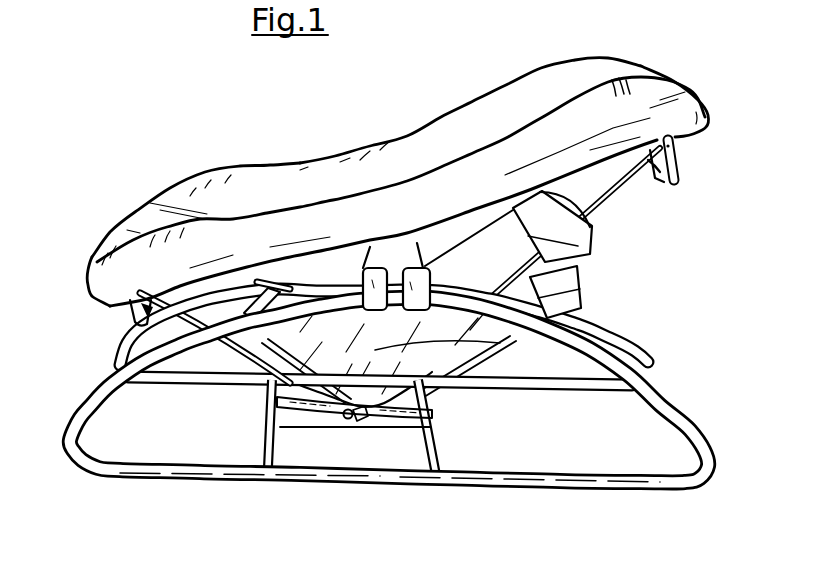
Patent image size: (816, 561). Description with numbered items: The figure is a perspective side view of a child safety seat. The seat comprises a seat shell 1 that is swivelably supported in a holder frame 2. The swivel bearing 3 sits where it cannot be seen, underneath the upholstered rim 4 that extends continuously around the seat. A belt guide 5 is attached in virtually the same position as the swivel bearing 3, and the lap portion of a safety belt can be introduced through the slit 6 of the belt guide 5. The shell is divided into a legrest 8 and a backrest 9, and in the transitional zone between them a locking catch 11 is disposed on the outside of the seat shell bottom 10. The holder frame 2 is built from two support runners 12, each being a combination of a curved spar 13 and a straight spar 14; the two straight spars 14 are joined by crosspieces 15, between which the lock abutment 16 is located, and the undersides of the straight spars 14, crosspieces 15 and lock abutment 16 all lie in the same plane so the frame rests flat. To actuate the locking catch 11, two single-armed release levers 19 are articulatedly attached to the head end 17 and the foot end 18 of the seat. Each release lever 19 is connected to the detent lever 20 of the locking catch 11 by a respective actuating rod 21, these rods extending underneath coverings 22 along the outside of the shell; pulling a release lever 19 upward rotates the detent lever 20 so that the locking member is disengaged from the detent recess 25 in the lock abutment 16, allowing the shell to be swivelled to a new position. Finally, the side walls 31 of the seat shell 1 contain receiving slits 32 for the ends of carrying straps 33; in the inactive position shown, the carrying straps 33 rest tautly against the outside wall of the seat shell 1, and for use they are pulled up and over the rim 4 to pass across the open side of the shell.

The seat shell 1 is at (440, 98).
The holder frame 2 is at (583, 490).
The swivel bearing 3 is at (390, 226).
The upholstered rim 4 is at (683, 82).
The belt guide 5 is at (470, 243).
The slit 6 is at (392, 298).
The legrest 8 is at (111, 226).
The backrest 9 is at (691, 75).
The seat shell bottom 10 is at (270, 388).
The locking catch 11 is at (361, 422).
The support runners 12 is at (549, 484).
The curved spar 13 is at (623, 321).
The straight spar 14 is at (158, 478).
The crosspieces 15 is at (260, 438).
The lock abutment 16 is at (412, 428).
The head end 17 is at (632, 64).
The foot end 18 is at (91, 252).
The release levers 19 is at (130, 317).
The detent lever 20 is at (347, 420).
The actuating rods 21 is at (654, 178).
The coverings 22 is at (628, 188).
The detent recess 25 is at (433, 404).
The side walls 31 is at (444, 345).
The receiving slits 32 is at (271, 282).
The carrying straps 33 is at (249, 300).